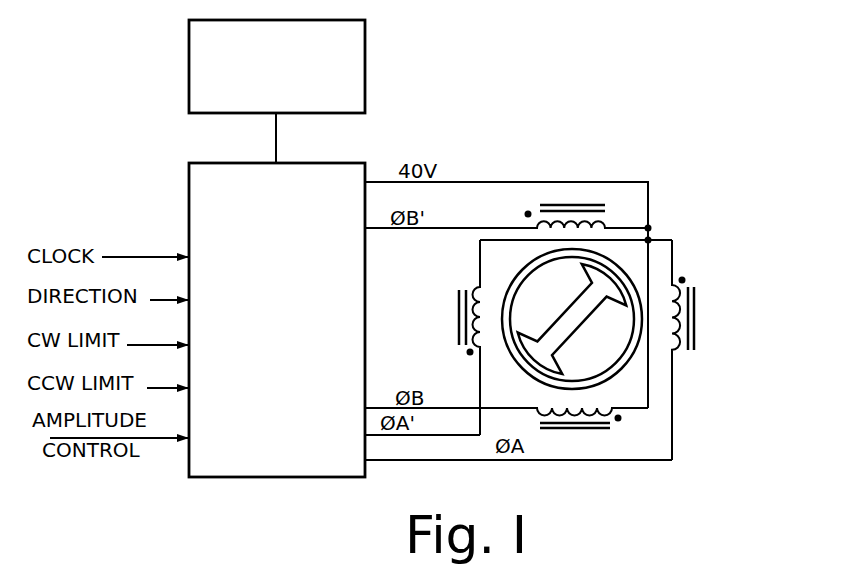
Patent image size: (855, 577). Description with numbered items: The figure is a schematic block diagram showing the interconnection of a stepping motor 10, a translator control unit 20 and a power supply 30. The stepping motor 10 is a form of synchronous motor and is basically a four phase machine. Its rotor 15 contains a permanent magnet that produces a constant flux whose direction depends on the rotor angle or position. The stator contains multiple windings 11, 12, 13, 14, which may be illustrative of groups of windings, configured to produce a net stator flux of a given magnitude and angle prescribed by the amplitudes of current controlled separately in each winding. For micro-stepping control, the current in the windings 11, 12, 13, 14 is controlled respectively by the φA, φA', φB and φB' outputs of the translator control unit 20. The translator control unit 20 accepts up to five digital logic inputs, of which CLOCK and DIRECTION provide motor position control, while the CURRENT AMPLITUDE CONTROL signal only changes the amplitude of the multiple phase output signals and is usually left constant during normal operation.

The stepping motor 10 is at (645, 266).
The winding 11 is at (696, 318).
The winding 12 is at (456, 312).
The winding 13 is at (590, 432).
The winding 14 is at (556, 205).
The rotor 15 is at (584, 326).
The translator control unit 20 is at (292, 453).
The power supply 30 is at (378, 57).